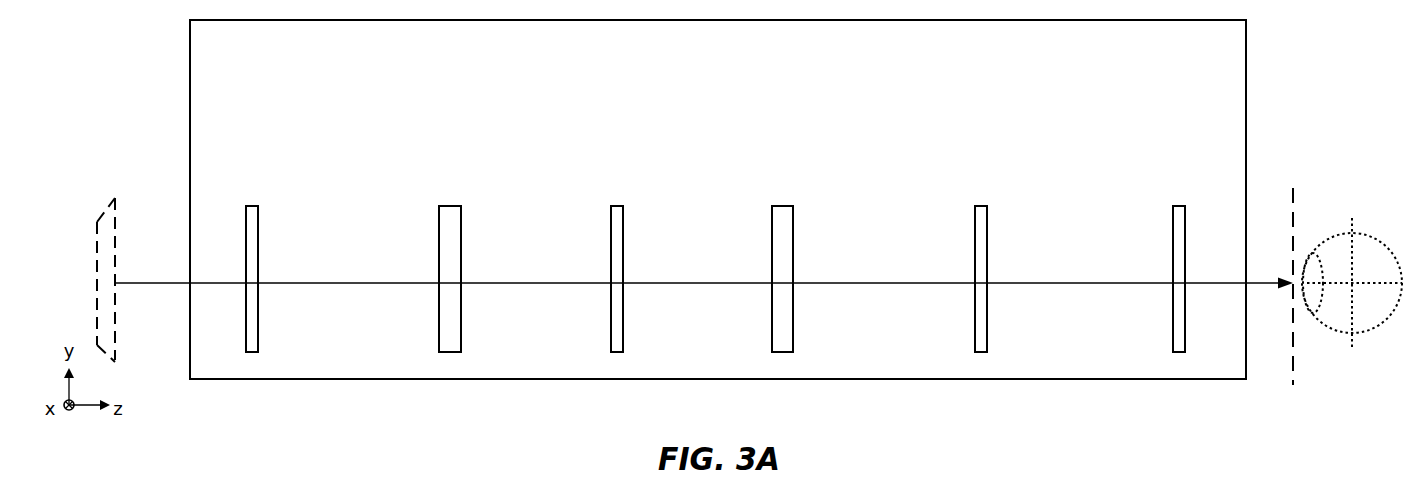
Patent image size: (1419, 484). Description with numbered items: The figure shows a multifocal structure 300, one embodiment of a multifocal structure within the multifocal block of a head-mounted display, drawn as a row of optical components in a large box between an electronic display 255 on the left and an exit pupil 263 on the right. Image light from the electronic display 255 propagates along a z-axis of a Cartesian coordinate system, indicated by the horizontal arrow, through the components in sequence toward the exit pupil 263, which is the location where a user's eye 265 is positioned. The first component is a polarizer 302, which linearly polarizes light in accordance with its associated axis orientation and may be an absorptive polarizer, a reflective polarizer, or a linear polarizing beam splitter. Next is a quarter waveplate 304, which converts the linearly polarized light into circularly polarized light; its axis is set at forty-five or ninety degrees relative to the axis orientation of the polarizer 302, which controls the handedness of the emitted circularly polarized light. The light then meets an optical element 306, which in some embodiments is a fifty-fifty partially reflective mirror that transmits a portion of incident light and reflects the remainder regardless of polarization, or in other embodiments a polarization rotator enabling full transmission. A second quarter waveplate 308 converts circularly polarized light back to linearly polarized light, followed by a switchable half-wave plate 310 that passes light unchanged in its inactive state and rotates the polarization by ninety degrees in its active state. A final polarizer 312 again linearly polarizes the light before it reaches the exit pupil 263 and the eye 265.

The electronic display 255 is at (110, 244).
The multifocal structure 300 is at (718, 199).
The polarizer 302 is at (252, 239).
The quarter waveplate 304 is at (450, 224).
The optical element 306 is at (617, 224).
The quarter waveplate 308 is at (782, 224).
The switchable half-wave plate (SHWP) 310 is at (980, 224).
The polarizer 312 is at (1180, 239).
The exit pupil 263 is at (1292, 256).
The eye 265 is at (1352, 317).